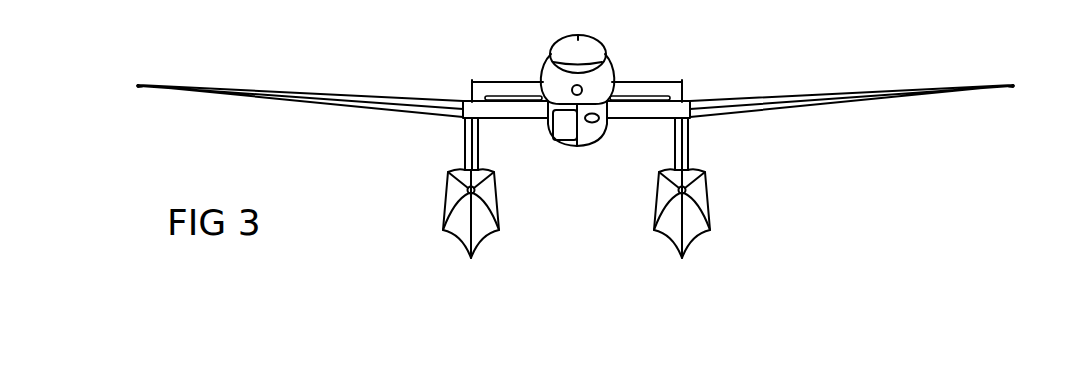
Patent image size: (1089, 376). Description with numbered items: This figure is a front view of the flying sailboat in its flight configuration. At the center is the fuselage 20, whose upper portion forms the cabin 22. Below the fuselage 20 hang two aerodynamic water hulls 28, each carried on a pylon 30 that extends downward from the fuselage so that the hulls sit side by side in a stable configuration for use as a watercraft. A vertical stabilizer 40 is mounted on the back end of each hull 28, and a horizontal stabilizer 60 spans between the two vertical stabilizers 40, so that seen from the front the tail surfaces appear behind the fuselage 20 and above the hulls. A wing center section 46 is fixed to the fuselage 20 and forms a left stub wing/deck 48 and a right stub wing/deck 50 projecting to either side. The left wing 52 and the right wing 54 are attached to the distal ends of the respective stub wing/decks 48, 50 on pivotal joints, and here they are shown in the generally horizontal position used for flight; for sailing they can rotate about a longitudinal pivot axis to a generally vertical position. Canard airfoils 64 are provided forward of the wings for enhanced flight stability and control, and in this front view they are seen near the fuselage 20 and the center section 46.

The fuselage 20 is at (553, 72).
The cabin 22 is at (582, 48).
The aerodynamic water hull 28 is at (447, 199).
The pylon 30 is at (463, 160).
The vertical stabilizer 40 is at (470, 90).
The wing center section 46 is at (536, 124).
The left stub wing/deck 48 is at (660, 117).
The right stub wing/deck 50 is at (495, 115).
The left wing 52 is at (850, 105).
The right wing 54 is at (322, 95).
The horizontal stabilizer 60 is at (508, 82).
The canard airfoil 64 is at (643, 97).